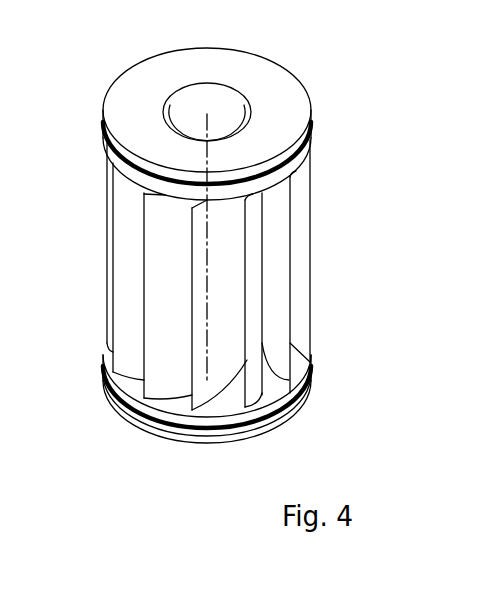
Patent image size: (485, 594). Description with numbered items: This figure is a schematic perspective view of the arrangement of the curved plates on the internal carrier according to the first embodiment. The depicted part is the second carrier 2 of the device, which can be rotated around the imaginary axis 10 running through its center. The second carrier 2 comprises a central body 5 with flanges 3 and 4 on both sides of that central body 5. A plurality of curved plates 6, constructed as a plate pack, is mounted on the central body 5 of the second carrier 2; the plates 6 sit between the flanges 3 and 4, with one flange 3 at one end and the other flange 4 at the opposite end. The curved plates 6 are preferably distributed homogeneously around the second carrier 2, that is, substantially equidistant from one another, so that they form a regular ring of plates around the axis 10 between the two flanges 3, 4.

The second carrier 2 is at (98, 54).
The imaginary axis 10 is at (205, 121).
The central body 5 is at (234, 122).
The flange 3 is at (288, 114).
The curved plates 6 is at (107, 251).
The flange 4 is at (274, 395).